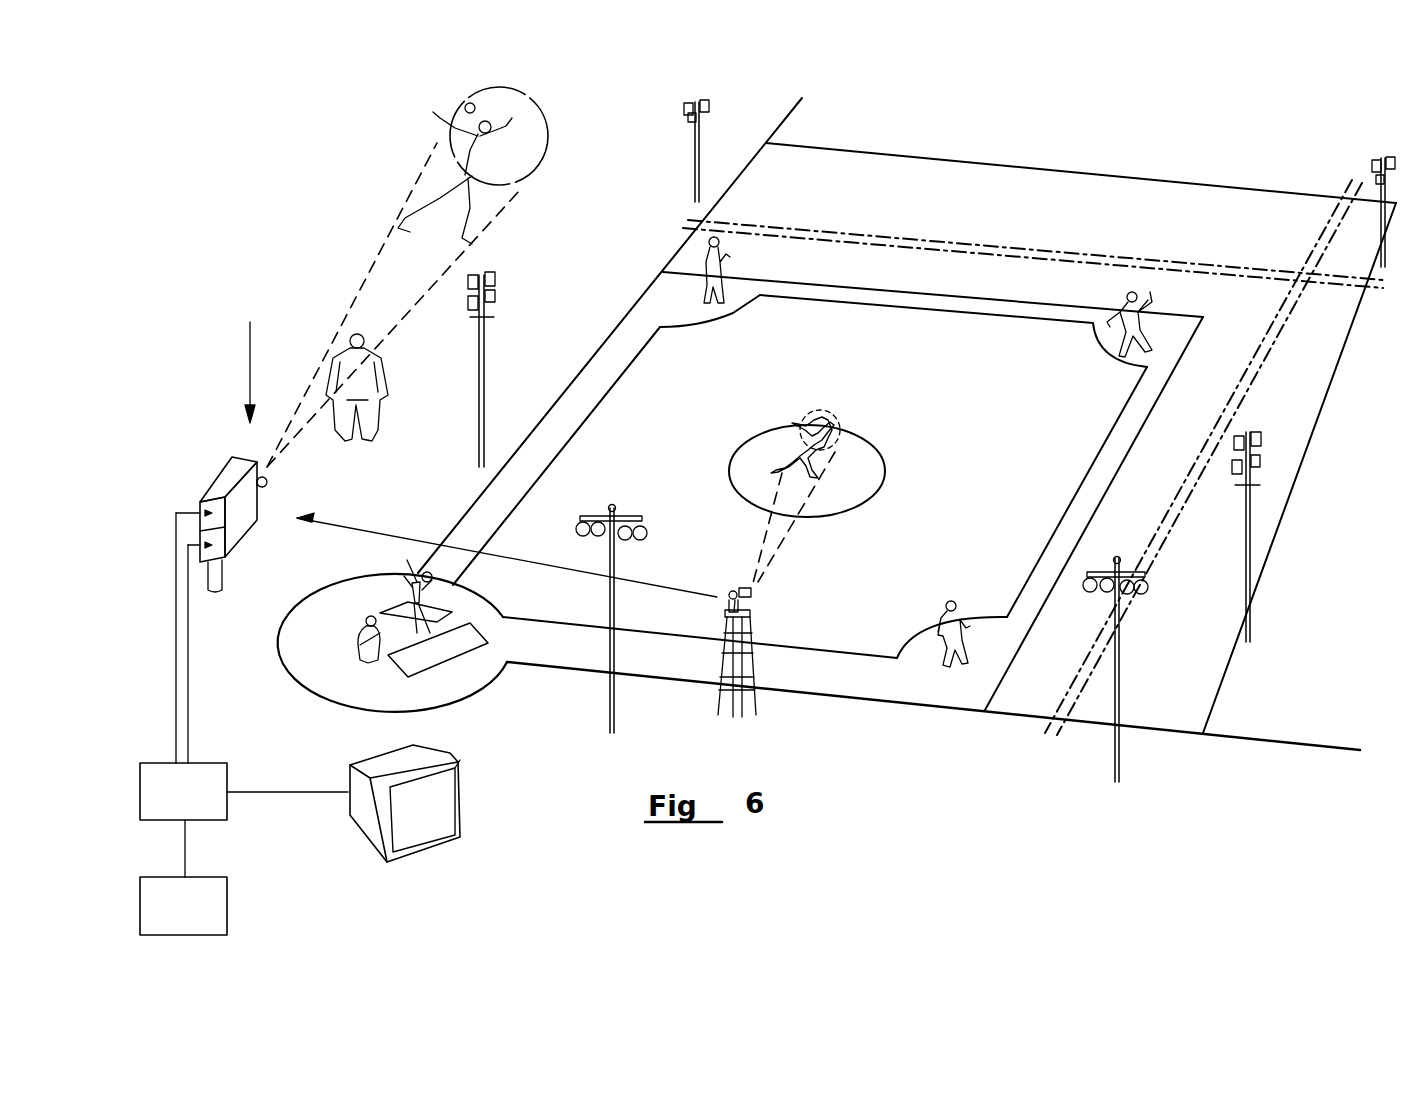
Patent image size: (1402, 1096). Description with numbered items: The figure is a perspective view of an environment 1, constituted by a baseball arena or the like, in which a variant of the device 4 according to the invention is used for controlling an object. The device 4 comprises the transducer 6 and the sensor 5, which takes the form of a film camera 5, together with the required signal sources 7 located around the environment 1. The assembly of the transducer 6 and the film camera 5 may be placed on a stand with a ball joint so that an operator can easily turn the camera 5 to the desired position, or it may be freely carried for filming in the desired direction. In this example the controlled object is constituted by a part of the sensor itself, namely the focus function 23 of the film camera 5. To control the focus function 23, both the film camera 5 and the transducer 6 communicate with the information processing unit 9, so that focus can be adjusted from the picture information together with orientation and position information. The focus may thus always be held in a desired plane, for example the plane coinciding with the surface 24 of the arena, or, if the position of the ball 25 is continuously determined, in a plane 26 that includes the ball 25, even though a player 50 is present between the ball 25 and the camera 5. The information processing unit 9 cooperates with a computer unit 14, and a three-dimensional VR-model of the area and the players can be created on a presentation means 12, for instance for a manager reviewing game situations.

The environment 1 is at (982, 205).
The device 4 is at (249, 355).
The sensor 5 is at (243, 525).
The transducer 6 is at (227, 477).
The signal sources 7 is at (498, 285).
The information processing unit 9 is at (205, 780).
The presentation means 12 is at (425, 808).
The computer unit 14 is at (205, 900).
The focus function 23 is at (270, 483).
The surface of the baseball arena 24 is at (863, 613).
The ball 25 is at (466, 104).
The plane 26 is at (530, 146).
The player 50 is at (362, 385).